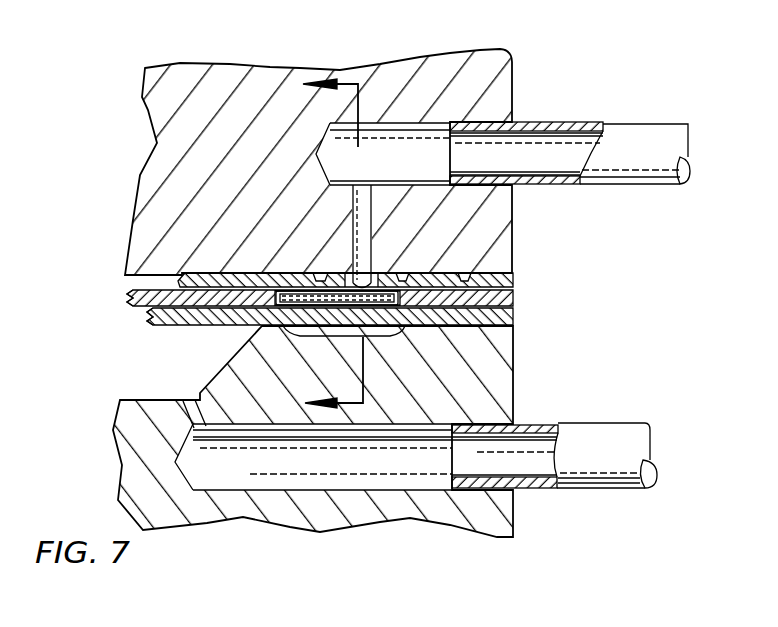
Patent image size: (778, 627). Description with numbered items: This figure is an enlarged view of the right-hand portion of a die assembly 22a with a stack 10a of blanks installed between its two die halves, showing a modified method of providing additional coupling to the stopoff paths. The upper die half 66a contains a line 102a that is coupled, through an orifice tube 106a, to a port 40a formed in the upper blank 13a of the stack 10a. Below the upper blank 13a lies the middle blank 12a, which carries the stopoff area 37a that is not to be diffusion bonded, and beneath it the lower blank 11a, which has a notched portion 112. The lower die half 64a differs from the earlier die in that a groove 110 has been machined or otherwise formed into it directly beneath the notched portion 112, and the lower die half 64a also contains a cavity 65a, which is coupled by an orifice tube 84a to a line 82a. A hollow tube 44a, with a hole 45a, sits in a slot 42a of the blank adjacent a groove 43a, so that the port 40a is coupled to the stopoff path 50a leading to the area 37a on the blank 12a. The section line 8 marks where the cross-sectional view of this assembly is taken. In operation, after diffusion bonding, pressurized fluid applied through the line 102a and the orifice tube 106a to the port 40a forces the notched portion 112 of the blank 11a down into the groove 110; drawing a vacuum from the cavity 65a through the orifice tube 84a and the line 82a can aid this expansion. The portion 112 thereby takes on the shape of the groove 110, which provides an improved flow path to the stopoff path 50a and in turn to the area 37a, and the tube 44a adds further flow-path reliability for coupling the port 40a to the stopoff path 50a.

The upper die half 66a is at (270, 68).
The orifice tube 106a is at (422, 118).
The line 102a is at (615, 125).
The section line 8— 8 is at (333, 243).
The port 40a is at (355, 272).
The blank 13a is at (515, 278).
The tube 44a is at (270, 275).
The hole 45a is at (343, 277).
The blank 12a is at (515, 297).
The stack 10a is at (130, 302).
The slot 42a is at (398, 310).
The groove 43a is at (318, 327).
The blank 11a is at (515, 315).
The area 37a is at (165, 328).
The stopoff path 50a is at (220, 328).
The notched portion 112 is at (292, 332).
The groove 110 is at (377, 333).
The cavity 65a is at (160, 365).
The lower die half 64a is at (508, 527).
The orifice tube 84a is at (292, 518).
The line 82a is at (628, 432).
The die assembly 22a is at (607, 292).